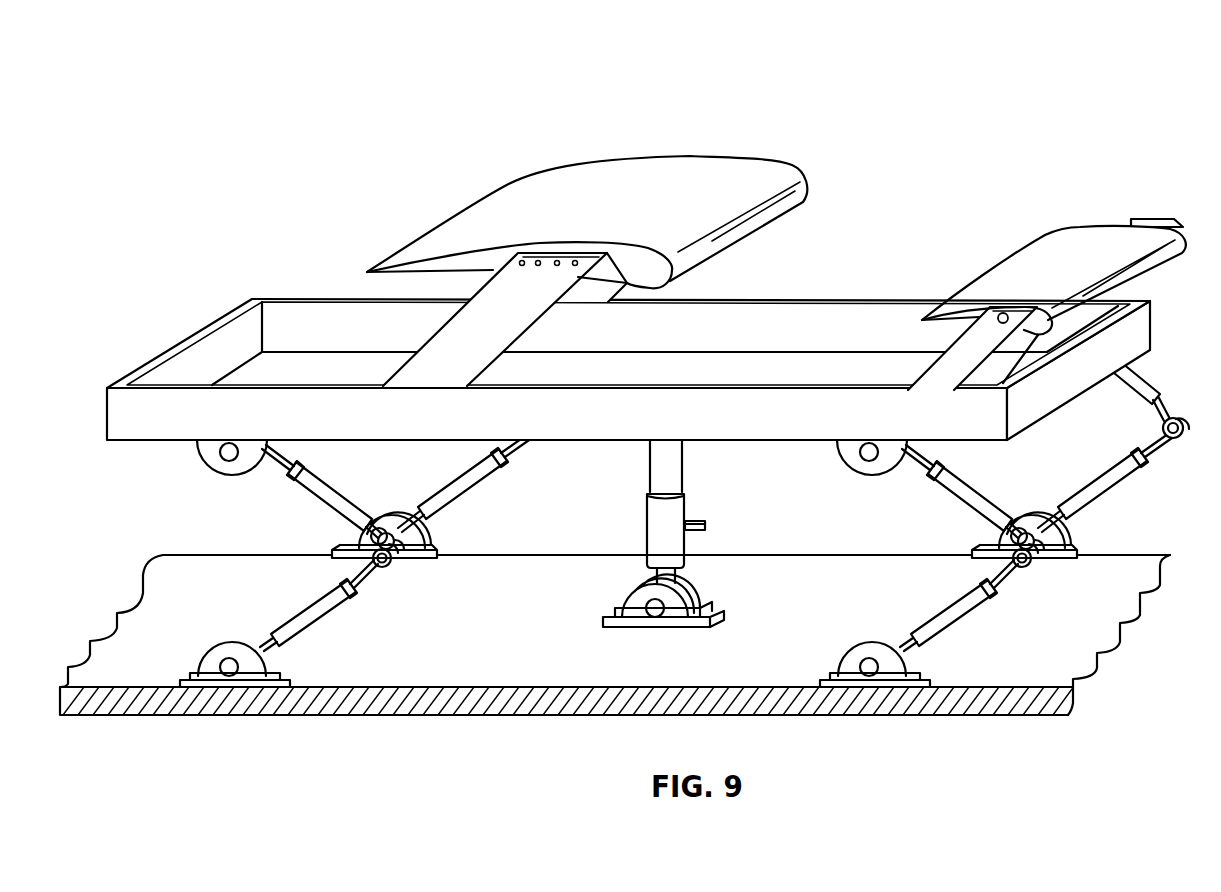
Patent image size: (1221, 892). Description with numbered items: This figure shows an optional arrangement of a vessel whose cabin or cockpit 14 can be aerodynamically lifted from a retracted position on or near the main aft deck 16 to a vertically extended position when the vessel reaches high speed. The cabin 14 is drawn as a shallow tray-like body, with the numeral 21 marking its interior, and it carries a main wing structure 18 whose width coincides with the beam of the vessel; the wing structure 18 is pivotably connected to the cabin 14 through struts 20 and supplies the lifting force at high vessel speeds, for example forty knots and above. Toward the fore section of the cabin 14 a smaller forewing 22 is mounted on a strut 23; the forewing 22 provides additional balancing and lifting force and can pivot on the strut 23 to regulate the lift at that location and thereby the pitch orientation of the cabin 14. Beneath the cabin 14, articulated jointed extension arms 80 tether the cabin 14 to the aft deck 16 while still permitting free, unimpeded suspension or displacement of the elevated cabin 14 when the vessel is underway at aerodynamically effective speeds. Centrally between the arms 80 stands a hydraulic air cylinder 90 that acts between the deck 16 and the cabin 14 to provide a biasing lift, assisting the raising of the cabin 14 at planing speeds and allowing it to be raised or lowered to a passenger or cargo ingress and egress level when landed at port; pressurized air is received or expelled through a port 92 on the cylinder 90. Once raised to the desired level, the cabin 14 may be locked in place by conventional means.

The cabin 14 is at (820, 299).
The main aft deck 16 is at (554, 629).
The main wing structure 18 is at (743, 168).
The struts 20 is at (551, 307).
The tray interior surface 21 is at (625, 382).
The forewing 22 is at (1090, 237).
The strut 23 is at (950, 345).
The articulated jointed extension arms 80 is at (493, 492).
The hydraulic air cylinder 90 is at (680, 502).
The port 92 is at (699, 521).